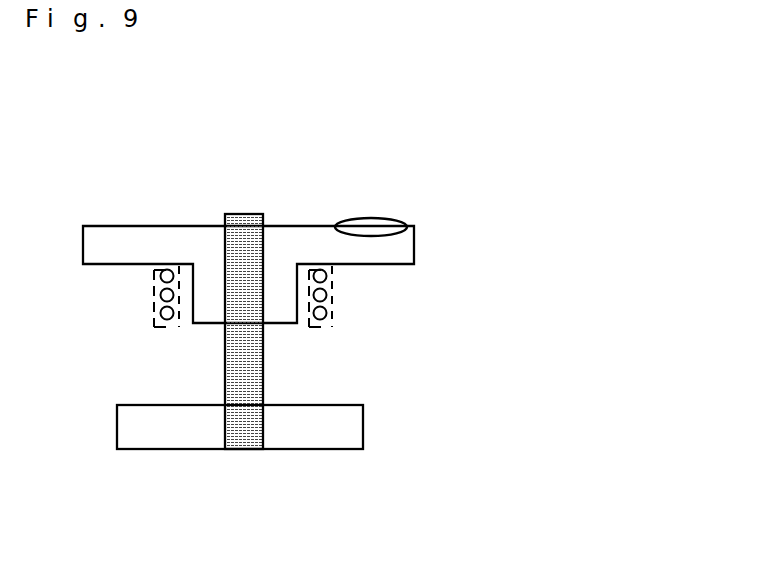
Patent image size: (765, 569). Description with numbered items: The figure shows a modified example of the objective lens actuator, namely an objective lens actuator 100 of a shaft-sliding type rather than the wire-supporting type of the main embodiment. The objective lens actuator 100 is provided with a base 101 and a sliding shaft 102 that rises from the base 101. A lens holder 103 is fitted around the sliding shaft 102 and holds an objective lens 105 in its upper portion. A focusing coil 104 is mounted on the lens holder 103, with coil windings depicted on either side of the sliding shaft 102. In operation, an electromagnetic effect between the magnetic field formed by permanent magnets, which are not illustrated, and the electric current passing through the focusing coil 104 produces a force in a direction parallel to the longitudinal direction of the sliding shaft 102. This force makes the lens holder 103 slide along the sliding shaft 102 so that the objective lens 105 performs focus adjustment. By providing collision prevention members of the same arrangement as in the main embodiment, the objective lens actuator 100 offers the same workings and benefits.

The objective lens actuator 100 is at (333, 151).
The base 101 is at (286, 452).
The sliding shaft 102 is at (243, 217).
The lens holder 103 is at (122, 229).
The focusing coil 104 is at (333, 303).
The objective lens 105 is at (377, 222).